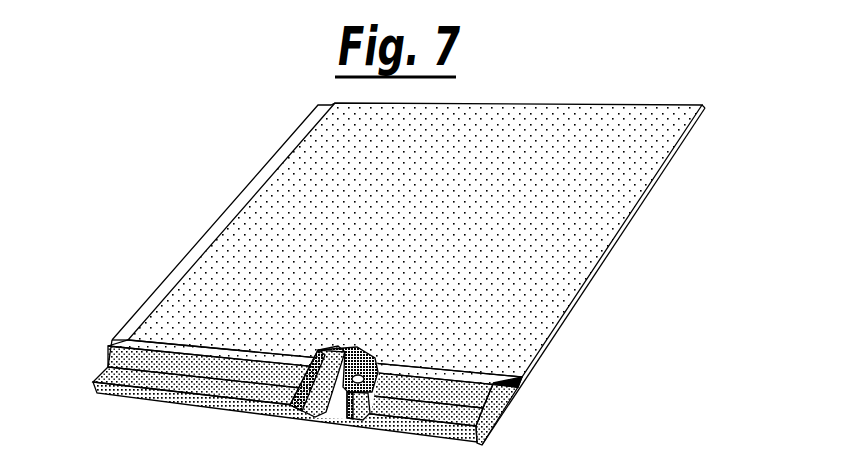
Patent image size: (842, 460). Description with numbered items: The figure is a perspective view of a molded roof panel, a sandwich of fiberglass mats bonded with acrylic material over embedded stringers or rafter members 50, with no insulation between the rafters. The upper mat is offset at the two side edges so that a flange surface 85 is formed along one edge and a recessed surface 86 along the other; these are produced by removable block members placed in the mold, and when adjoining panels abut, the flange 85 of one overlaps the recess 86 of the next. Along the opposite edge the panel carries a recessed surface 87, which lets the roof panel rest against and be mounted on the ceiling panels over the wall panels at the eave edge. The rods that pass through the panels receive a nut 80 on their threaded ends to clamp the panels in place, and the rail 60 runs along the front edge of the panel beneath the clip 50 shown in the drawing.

The nut 80 is at (547, 262).
The recessed surface 86 is at (177, 272).
The flange surface 85 is at (521, 383).
The recessed surface 87 is at (108, 351).
The lip rail 60 is at (486, 436).
The stringer or rafter member 50 is at (357, 406).